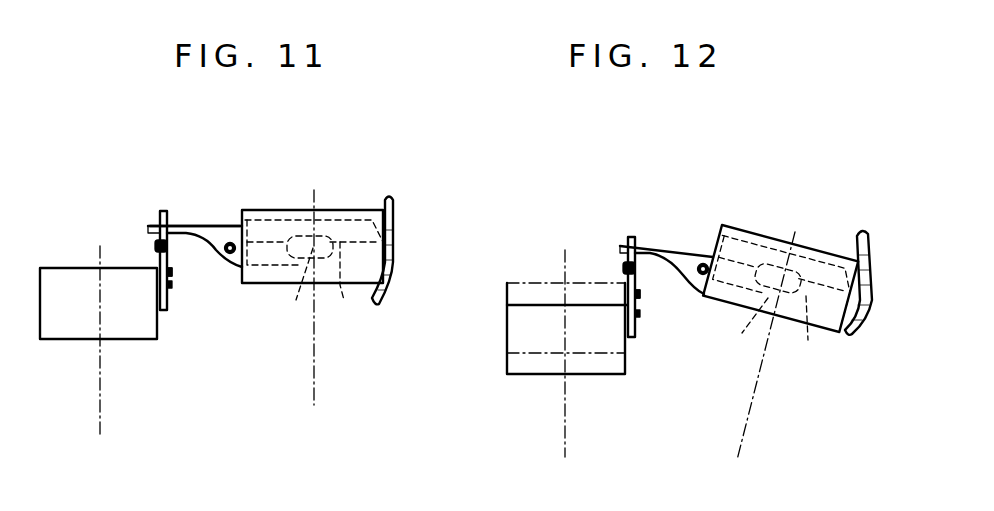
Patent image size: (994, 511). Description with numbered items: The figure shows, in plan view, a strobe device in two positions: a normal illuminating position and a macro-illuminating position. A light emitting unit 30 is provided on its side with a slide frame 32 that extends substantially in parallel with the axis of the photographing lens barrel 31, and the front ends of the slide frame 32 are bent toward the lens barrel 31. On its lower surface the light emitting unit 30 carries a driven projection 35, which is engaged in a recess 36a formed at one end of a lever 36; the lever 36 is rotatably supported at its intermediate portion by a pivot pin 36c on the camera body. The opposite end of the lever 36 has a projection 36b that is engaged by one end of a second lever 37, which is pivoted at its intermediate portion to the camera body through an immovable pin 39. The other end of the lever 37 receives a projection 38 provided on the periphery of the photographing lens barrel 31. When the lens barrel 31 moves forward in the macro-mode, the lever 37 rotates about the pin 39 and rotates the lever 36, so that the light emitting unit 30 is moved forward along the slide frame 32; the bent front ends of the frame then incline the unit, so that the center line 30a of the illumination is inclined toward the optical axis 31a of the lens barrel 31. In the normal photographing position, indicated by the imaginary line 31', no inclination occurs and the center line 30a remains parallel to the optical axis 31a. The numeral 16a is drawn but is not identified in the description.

In FIG. 11, the light emitting unit 30 is at (339, 210).
In FIG. 12, the light emitting unit 30 is at (738, 228).
In FIG. 11, the center line of the direction of illumination 30a is at (313, 336).
In FIG. 12, the center line of the direction of illumination 30a is at (755, 395).
In FIG. 11, the photographing lens barrel 31 is at (110, 336).
In FIG. 12, the photographing lens barrel 31 is at (567, 360).
In FIG. 12, the imaginary line 31' is at (559, 251).
In FIG. 11, the optical axis 31a is at (101, 410).
In FIG. 12, the optical axis 31a is at (566, 437).
In FIG. 11, the slide frame 32 is at (397, 255).
In FIG. 12, the slide frame 32 is at (870, 250).
In FIG. 11, the driven projection 35 is at (283, 293).
In FIG. 12, the driven projection 35 is at (740, 327).
In FIG. 11, the lever 36 is at (214, 236).
In FIG. 12, the lever 36 is at (670, 247).
In FIG. 12, the recess 36a is at (807, 335).
In FIG. 11, the projection 36b is at (175, 223).
In FIG. 11, the pivot pin 36c is at (233, 242).
In FIG. 12, the pivot pin 36c is at (703, 263).
In FIG. 11, the lever 37 is at (172, 270).
In FIG. 12, the lever 37 is at (626, 280).
In FIG. 11, the projection 38 is at (170, 283).
In FIG. 12, the projection 38 is at (640, 313).
In FIG. 11, the immovable pin 39 is at (156, 246).
In FIG. 11, the pin 16a is at (353, 290).